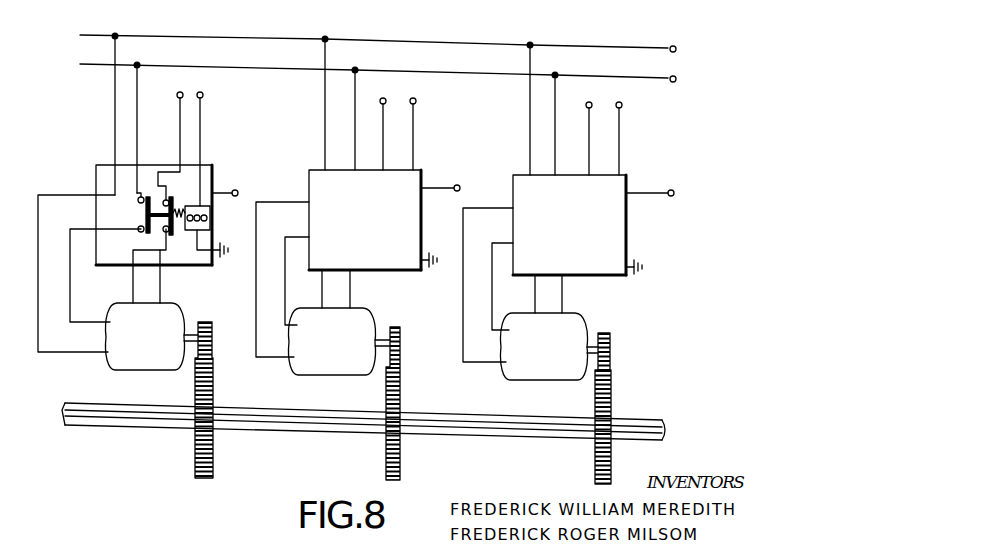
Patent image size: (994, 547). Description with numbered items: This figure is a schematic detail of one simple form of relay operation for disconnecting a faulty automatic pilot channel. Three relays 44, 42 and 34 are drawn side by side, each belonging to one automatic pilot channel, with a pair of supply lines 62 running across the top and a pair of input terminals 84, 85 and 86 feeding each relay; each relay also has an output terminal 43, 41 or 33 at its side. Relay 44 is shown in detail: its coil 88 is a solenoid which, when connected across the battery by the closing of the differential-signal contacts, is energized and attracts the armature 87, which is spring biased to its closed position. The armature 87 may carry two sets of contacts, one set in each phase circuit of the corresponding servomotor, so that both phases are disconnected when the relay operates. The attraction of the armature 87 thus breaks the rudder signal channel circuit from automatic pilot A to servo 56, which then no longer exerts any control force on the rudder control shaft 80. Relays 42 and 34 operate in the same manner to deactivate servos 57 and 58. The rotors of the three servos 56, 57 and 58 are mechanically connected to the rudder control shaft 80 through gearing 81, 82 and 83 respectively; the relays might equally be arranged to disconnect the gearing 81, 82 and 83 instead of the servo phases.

The reference voltage supply lines 62 is at (93, 36).
The input terminals of relay A 84 is at (203, 99).
The input terminals of relay B 85 is at (415, 105).
The input terminals of relay C 86 is at (620, 110).
The output terminal of relay A 43 is at (216, 190).
The output terminal of relay B 41 is at (437, 189).
The output terminal of relay C 33 is at (647, 194).
The armature 87 is at (140, 209).
The coil 88 is at (213, 215).
The relay 44 is at (143, 258).
The relay 42 is at (409, 276).
The relay 34 is at (616, 278).
The servo 56 is at (148, 371).
The servo 57 is at (333, 378).
The servo 58 is at (546, 382).
The gearing 81 is at (213, 397).
The gearing 82 is at (403, 401).
The gearing 83 is at (610, 412).
The rudder control shaft 80 is at (328, 428).